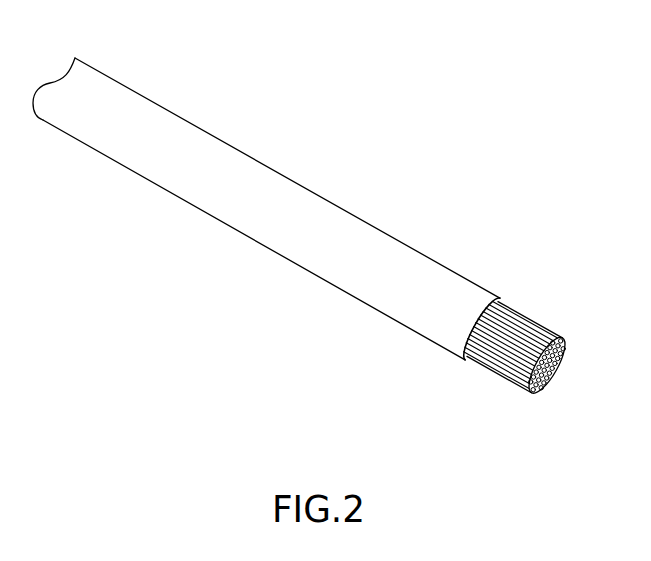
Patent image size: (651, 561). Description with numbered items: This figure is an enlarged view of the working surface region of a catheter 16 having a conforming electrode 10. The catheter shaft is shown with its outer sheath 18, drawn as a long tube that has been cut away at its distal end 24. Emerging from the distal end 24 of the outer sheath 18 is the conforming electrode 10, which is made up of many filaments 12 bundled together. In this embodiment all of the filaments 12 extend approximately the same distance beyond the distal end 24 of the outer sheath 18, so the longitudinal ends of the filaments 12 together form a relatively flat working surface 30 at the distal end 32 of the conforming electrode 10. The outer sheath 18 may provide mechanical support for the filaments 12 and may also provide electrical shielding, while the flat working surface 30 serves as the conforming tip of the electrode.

The conforming electrode 10 is at (552, 292).
The filaments 12 is at (505, 373).
The catheter 16 is at (333, 110).
The outer sheath 18 is at (215, 203).
The distal end of the outer sheath 24 is at (467, 355).
The working surface 30 is at (560, 376).
The distal end of the conforming electrode 32 is at (560, 337).